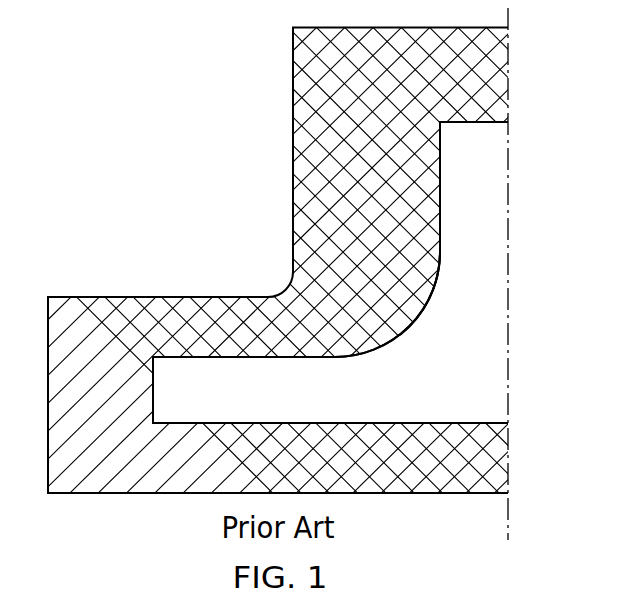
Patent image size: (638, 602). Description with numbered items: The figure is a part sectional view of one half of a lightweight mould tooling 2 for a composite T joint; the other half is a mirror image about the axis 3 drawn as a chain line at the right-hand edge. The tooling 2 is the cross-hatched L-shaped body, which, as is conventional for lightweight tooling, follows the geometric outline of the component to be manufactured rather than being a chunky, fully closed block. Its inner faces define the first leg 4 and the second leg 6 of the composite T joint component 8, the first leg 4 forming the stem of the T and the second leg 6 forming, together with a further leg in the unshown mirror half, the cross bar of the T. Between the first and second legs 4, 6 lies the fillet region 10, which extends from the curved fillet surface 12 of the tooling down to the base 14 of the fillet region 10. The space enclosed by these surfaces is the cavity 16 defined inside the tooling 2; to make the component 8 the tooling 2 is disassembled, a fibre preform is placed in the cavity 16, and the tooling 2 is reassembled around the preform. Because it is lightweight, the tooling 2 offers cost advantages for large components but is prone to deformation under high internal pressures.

The lightweight mould tooling 2 is at (235, 130).
The axis 3 is at (514, 17).
The first leg 4 is at (486, 221).
The second leg 6 is at (205, 392).
The composite T joint component 8 is at (479, 288).
The fillet region 10 is at (461, 369).
The fillet surface 12 is at (399, 318).
The base 14 is at (493, 431).
The cavity 16 is at (465, 142).